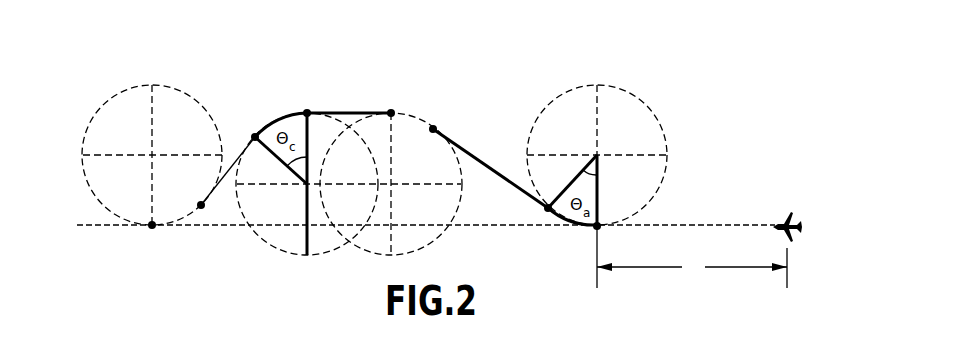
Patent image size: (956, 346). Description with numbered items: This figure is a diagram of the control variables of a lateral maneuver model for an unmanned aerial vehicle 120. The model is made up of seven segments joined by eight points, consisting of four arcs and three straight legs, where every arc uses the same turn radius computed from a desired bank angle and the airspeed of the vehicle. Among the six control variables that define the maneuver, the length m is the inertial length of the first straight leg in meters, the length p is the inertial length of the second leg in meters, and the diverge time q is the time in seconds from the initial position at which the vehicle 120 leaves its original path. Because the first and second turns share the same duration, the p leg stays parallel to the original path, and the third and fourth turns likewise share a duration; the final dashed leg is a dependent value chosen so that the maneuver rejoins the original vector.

The unmanned aerial vehicle 120 is at (781, 222).
The inertial length of the second leg p is at (349, 97).
The inertial length of the first leg m is at (490, 168).
The diverge time from the initial position q is at (692, 257).